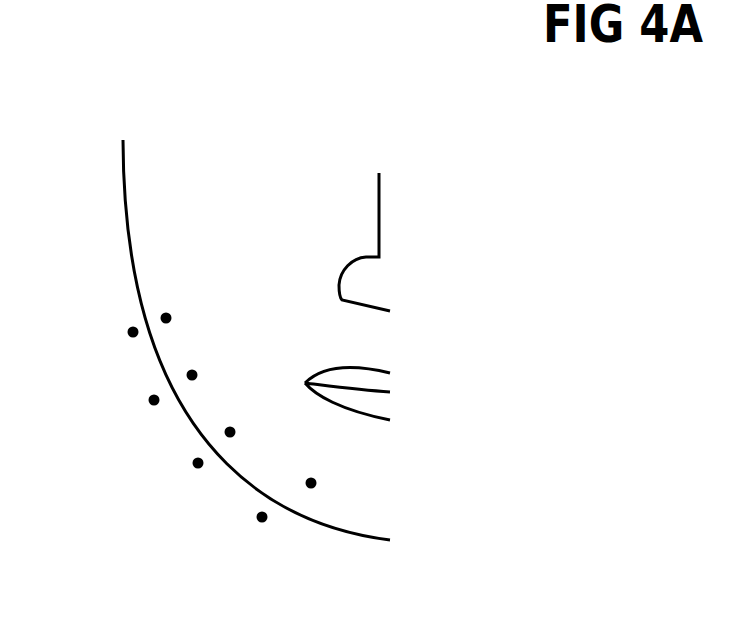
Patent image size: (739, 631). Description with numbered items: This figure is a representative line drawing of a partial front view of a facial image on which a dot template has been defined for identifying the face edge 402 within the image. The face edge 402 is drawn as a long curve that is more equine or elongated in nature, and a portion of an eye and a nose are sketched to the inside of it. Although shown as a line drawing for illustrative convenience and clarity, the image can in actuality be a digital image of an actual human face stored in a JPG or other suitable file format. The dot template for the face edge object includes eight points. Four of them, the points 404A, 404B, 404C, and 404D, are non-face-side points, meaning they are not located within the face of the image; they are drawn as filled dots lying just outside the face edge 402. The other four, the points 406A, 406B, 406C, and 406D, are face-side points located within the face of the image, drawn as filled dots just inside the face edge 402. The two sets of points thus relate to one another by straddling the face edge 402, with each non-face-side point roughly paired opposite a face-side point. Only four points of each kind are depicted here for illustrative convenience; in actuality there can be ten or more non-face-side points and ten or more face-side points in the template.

The face edge 402 is at (123, 200).
The non-face-side point 404A is at (130, 334).
The non-face-side point 404B is at (150, 401).
The non-face-side point 404C is at (197, 467).
The non-face-side point 404D is at (260, 522).
The face-side point 406A is at (205, 262).
The face-side point 406B is at (197, 375).
The face-side point 406C is at (235, 432).
The face-side point 406D is at (316, 485).